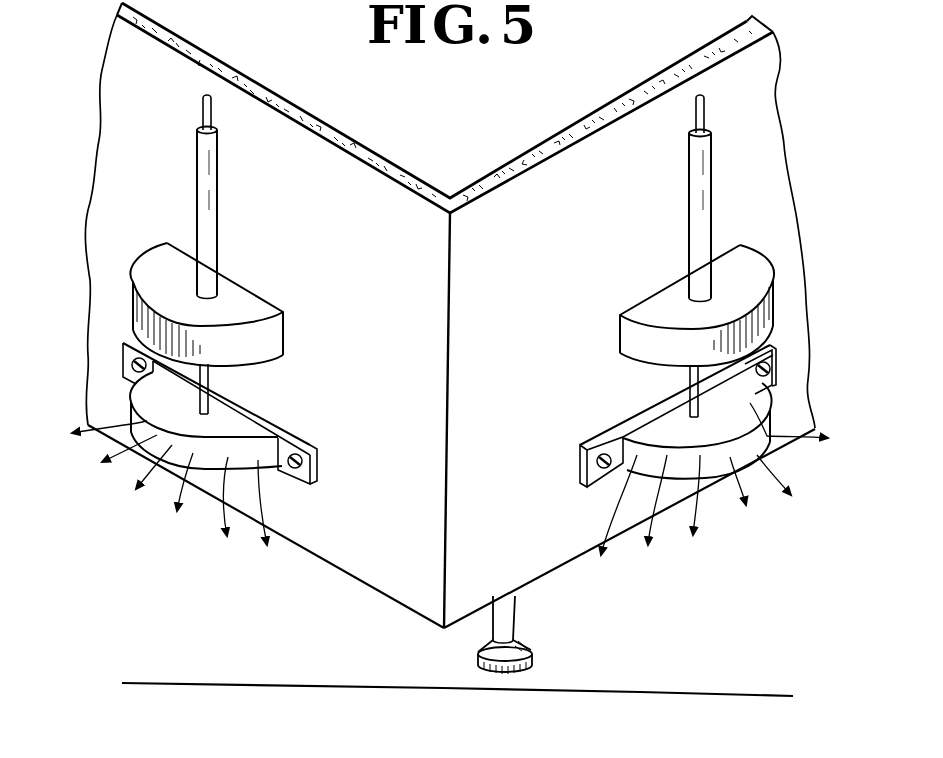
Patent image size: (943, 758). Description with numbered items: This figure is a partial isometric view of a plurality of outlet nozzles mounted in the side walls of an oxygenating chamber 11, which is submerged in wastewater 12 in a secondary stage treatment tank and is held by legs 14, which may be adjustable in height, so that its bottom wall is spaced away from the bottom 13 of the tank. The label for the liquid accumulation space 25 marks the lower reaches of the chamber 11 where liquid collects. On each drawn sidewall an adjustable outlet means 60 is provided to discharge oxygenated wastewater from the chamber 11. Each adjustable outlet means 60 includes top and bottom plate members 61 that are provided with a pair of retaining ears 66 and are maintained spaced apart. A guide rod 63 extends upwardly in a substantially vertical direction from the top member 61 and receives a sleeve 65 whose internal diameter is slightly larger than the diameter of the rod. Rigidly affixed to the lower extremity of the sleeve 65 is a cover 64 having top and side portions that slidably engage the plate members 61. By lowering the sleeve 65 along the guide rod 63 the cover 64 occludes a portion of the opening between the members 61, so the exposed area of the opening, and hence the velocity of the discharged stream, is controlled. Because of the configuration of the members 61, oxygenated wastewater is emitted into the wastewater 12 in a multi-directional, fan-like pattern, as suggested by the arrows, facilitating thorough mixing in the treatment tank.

The chamber 11 is at (416, 372).
The wastewater 12 is at (55, 366).
The bottom 13 is at (262, 686).
The legs 14 is at (517, 623).
The liquid accumulation space 25 is at (461, 123).
The adjustable outlet means 60 is at (296, 494).
The top and bottom plate members 61 is at (147, 421).
The guide rod 63 is at (212, 370).
The cover 64 is at (247, 293).
The sleeve 65 is at (218, 213).
The retaining ears 66 is at (123, 340).